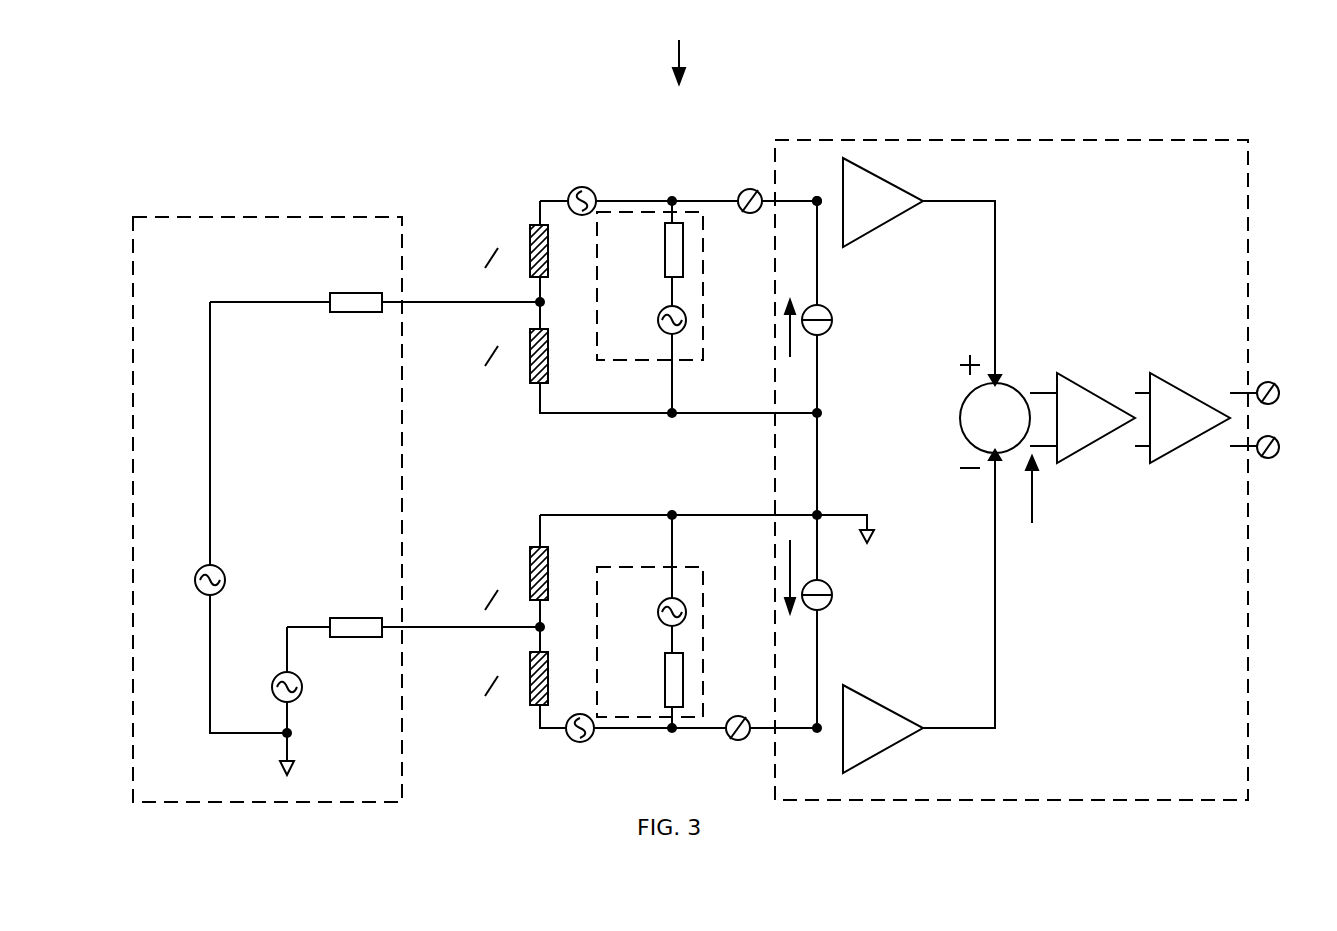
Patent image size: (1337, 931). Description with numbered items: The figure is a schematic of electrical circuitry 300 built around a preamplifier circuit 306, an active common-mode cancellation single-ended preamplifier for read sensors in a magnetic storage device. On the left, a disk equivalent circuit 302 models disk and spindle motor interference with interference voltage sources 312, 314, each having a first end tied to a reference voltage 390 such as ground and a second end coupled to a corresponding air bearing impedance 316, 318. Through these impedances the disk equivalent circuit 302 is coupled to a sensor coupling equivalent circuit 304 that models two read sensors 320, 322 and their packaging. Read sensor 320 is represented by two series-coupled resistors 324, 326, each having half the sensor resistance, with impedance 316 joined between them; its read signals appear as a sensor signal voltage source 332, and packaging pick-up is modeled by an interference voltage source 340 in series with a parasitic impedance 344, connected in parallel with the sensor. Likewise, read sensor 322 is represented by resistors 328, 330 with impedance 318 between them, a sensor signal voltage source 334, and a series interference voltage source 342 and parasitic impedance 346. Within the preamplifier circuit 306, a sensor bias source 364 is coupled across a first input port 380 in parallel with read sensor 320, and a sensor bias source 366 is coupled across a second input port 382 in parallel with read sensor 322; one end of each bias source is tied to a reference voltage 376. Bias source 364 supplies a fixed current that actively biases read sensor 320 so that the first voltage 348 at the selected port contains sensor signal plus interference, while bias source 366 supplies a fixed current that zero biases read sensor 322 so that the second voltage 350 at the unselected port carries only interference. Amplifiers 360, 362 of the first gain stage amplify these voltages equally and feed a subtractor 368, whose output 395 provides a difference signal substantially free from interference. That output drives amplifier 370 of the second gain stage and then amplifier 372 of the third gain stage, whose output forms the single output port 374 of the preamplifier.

The electrical circuitry 300 is at (470, 806).
The disk equivalent circuit 302 is at (256, 217).
The sensor coupling equivalent circuit 304 is at (679, 48).
The preamplifier circuit 306 is at (1025, 140).
The interference voltage source 312 is at (218, 570).
The interference voltage source 314 is at (303, 685).
The air bearing impedance 316 is at (352, 313).
The air bearing impedance 318 is at (328, 625).
The read sensor 320 is at (580, 240).
The read sensor 322 is at (582, 695).
The resistor 324 is at (529, 232).
The resistor 326 is at (528, 378).
The resistor 328 is at (529, 556).
The resistor 330 is at (527, 704).
The sensor signal voltage source 332 is at (572, 190).
The sensor signal voltage source 334 is at (594, 736).
The interference voltage source 340 is at (686, 318).
The interference voltage source 342 is at (687, 610).
The parasitic impedance 344 is at (684, 252).
The parasitic impedance 346 is at (684, 680).
The voltage v_1 348 is at (746, 192).
The voltage v_2 350 is at (738, 741).
The amplifier 360 is at (892, 186).
The amplifier 362 is at (878, 754).
The sensor bias source 364 is at (826, 308).
The sensor bias source 366 is at (828, 584).
The subtractor 368 is at (1010, 388).
The amplifier 370 is at (1078, 385).
The amplifier 372 is at (1172, 385).
The output port 374 is at (1276, 360).
The reference voltage 376 is at (877, 536).
The first input port 380 is at (782, 198).
The second input port 382 is at (777, 732).
The reference voltage 390 is at (280, 768).
The output 395 is at (1029, 508).